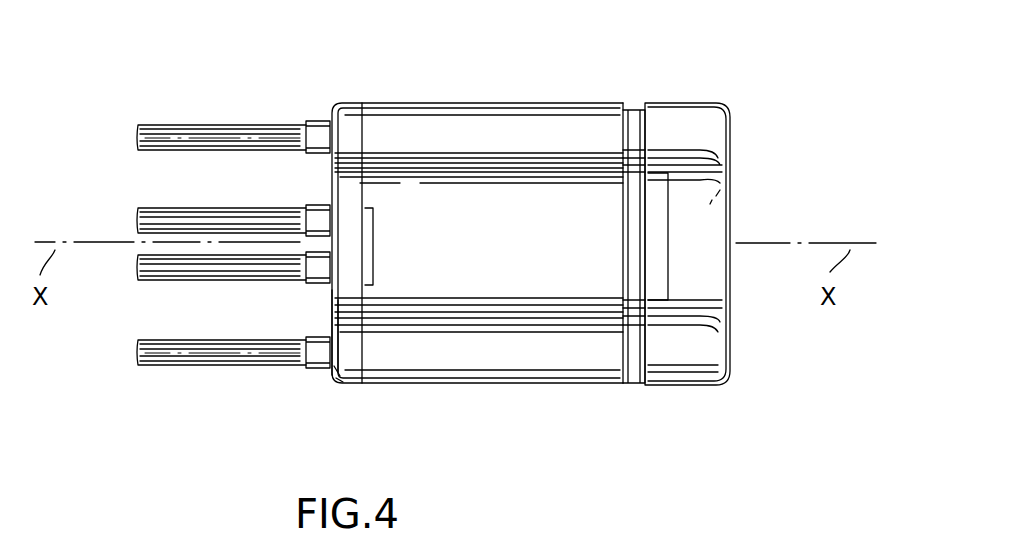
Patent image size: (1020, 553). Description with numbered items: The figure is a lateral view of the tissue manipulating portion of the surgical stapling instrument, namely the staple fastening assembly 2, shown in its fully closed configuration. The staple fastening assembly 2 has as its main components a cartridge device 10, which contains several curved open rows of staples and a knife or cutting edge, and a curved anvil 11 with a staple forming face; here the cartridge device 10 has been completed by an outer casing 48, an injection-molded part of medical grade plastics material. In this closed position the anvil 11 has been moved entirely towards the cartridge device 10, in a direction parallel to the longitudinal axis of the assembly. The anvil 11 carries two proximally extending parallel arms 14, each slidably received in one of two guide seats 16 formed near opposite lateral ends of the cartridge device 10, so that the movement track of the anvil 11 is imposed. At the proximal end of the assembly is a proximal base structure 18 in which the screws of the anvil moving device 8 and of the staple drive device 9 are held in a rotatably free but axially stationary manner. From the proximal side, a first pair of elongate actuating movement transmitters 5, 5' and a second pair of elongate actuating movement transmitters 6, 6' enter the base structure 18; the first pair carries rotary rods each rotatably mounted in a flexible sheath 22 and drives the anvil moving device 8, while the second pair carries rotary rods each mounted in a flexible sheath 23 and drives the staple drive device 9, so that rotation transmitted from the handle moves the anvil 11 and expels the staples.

The staple fastening assembly 2 is at (539, 80).
The elongate actuating movement transmitter 5 is at (233, 98).
The elongate actuating movement transmitter 5' is at (233, 396).
The elongate actuating movement transmitter 6 is at (206, 205).
The elongate actuating movement transmitter 6' is at (207, 290).
The anvil moving device 8 is at (369, 95).
The staple drive device 9 is at (445, 272).
The cartridge device 10 is at (462, 222).
The curved anvil 11 is at (712, 232).
The anvil arm 14 is at (633, 118).
The guide seat 16 is at (556, 133).
The proximal base structure 18 is at (345, 388).
The flexible sheath 22 is at (215, 125).
The flexible sheath 23 is at (235, 213).
The outer casing 48 is at (415, 108).